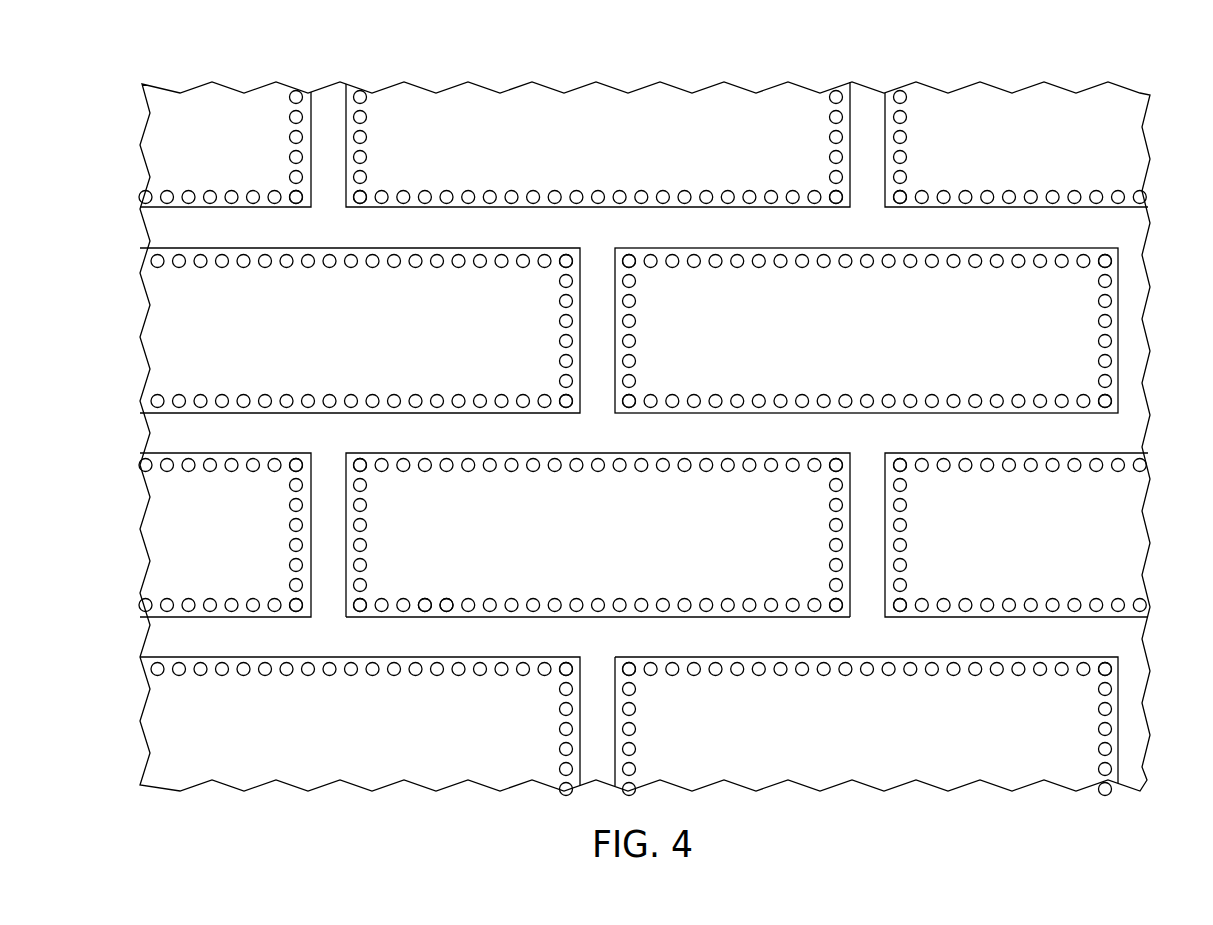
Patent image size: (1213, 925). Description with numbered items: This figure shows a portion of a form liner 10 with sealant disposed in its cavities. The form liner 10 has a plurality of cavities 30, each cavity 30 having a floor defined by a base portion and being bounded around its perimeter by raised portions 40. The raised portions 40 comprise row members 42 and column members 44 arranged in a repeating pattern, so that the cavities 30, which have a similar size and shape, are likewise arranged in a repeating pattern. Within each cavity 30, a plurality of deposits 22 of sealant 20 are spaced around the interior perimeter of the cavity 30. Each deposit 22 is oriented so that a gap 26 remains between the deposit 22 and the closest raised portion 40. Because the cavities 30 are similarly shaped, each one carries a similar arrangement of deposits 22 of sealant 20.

The form liner 10 is at (971, 120).
The sealant 20 is at (424, 612).
The deposit 22 is at (446, 612).
The gap 26 is at (528, 618).
The cavity 30 is at (1083, 317).
The raised portion 40 is at (1083, 433).
The row member 42 is at (962, 430).
The column member 44 is at (870, 530).